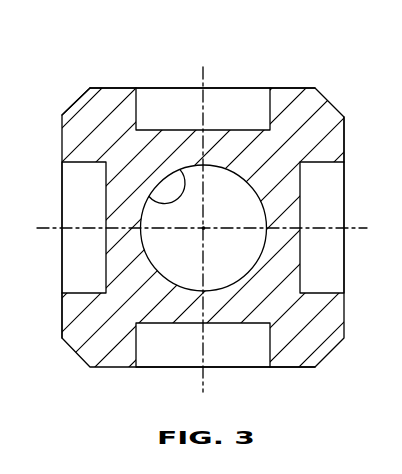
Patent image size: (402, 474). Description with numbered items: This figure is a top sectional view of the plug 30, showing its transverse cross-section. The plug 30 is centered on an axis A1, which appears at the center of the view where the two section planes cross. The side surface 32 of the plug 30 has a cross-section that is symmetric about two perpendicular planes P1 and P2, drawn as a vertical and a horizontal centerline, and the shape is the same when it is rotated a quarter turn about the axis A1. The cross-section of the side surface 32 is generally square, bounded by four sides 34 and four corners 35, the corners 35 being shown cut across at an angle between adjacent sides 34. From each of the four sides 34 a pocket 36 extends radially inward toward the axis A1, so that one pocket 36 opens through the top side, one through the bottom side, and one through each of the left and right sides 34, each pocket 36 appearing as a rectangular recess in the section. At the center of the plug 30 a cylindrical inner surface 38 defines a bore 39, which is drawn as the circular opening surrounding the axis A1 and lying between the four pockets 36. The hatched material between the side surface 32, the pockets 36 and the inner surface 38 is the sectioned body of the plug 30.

The plug 30 is at (341, 87).
The side surface 32 is at (297, 88).
The sides 34 is at (288, 88).
The corners 35 is at (72, 107).
The pocket 36 is at (249, 98).
The cylindrical inner surface 38 is at (148, 192).
The bore 39 is at (210, 160).
The plane P1 is at (203, 72).
The plane P2 is at (50, 226).
The axis A1 is at (204, 228).